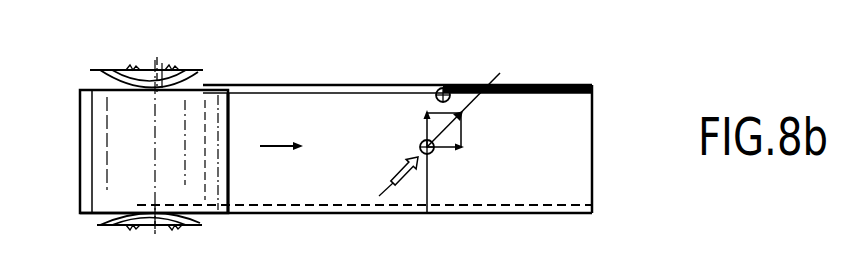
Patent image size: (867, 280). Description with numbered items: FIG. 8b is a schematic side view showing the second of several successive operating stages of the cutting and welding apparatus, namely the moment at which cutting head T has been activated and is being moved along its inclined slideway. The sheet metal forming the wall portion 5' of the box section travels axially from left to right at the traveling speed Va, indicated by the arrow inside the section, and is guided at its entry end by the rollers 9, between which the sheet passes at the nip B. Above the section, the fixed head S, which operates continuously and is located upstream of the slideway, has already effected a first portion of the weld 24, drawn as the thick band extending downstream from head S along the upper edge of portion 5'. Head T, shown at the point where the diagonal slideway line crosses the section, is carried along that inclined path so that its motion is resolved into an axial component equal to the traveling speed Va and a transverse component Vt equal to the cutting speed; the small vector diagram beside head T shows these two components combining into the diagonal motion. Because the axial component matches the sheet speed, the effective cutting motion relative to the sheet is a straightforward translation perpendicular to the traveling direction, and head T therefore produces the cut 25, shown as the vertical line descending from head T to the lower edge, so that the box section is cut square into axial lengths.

The portion of the box section 5' is at (363, 126).
The pressure rollers 9 is at (142, 70).
The roller nip / contact line B is at (162, 63).
The fixed head S is at (443, 88).
The weld 24 is at (537, 85).
The head T is at (434, 150).
The cut 25 is at (428, 187).
The traveling speed of the sheet metal Va is at (522, 118).
The transverse speed component Vt is at (423, 131).